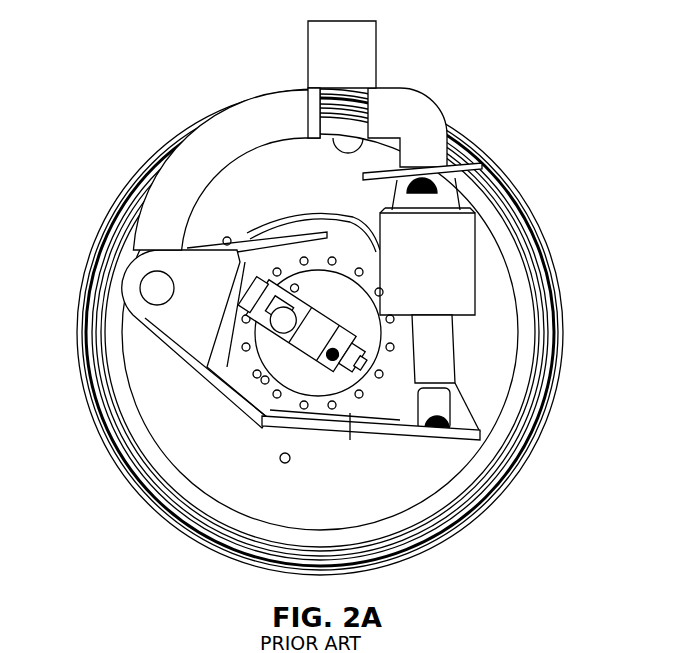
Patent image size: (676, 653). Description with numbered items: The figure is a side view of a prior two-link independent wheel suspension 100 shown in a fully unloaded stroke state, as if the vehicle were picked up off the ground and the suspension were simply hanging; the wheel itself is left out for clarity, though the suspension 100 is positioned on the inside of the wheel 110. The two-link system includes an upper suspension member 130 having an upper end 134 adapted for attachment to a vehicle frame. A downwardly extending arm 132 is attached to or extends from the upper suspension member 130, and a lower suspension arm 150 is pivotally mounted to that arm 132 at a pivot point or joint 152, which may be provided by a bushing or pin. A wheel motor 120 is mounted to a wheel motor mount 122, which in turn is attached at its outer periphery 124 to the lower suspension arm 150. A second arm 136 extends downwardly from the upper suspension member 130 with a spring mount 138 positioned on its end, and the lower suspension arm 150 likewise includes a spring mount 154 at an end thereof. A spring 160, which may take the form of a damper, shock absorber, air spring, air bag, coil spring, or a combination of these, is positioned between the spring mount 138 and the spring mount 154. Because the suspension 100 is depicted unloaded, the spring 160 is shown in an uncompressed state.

The two-link independent wheel suspension 100 is at (482, 34).
The wheel 110 is at (468, 517).
The wheel motor 120 is at (300, 323).
The wheel motor mount 122 is at (292, 373).
The outer periphery 124 is at (265, 380).
The upper suspension member 130 is at (330, 105).
The downwardly extending arm 132 is at (180, 170).
The upper end 134 is at (357, 30).
The second arm 136 is at (415, 118).
The spring mount 138 is at (462, 172).
The lower suspension arm 150 is at (350, 413).
The pivot point or joint 152 is at (158, 288).
The spring mount 154 is at (480, 433).
The spring 160 is at (458, 262).